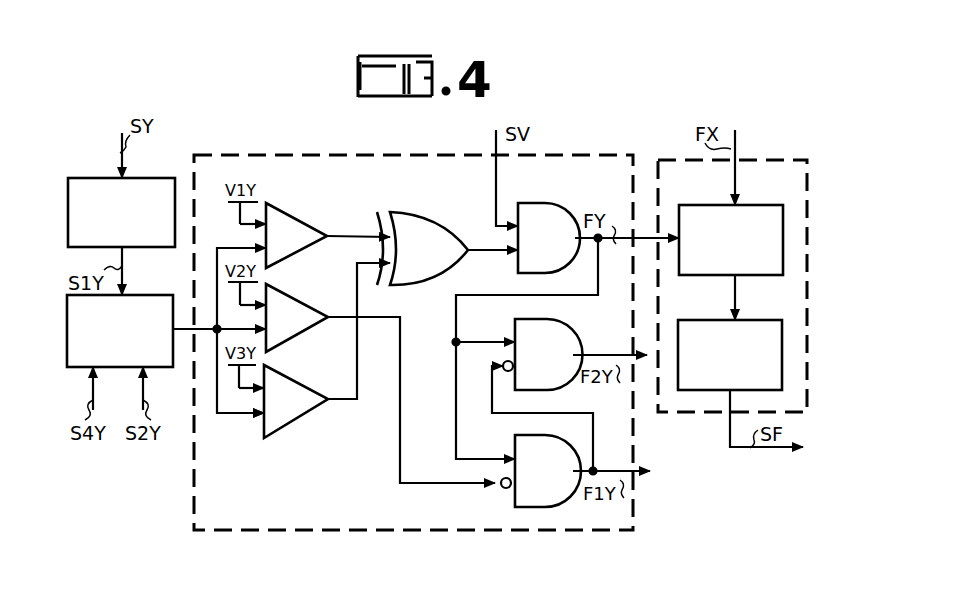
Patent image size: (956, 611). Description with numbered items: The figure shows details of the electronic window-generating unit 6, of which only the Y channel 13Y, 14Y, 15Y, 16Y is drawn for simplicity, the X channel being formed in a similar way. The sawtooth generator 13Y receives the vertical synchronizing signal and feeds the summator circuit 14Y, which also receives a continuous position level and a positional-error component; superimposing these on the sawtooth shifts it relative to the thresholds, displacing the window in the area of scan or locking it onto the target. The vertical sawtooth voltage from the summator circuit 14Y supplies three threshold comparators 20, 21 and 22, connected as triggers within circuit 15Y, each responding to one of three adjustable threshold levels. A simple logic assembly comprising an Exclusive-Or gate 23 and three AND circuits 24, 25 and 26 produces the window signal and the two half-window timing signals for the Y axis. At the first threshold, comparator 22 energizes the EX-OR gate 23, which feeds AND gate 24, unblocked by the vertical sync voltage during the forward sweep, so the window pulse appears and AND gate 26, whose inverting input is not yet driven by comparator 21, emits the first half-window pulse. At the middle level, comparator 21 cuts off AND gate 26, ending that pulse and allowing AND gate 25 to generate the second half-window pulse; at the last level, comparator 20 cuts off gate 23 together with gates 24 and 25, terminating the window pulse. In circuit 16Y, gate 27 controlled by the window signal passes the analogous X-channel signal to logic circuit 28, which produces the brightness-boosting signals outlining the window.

The Y channel sawtooth generator circuit 13Y is at (144, 178).
The summator circuit 14Y is at (147, 296).
The Y channel comparator and logic circuit 15Y is at (333, 155).
The Y channel output circuit 16Y is at (756, 160).
The threshold comparator 20 is at (297, 218).
The threshold comparator 21 is at (297, 302).
The threshold comparator 22 is at (297, 383).
The Exclusive-Or gate 23 is at (437, 224).
The AND gate 24 is at (552, 209).
The AND gate 25 is at (552, 328).
The AND gate 26 is at (558, 504).
The gate 27 is at (750, 209).
The logic circuit 28 is at (749, 326).
The electronic window-generating unit 6 is at (682, 455).